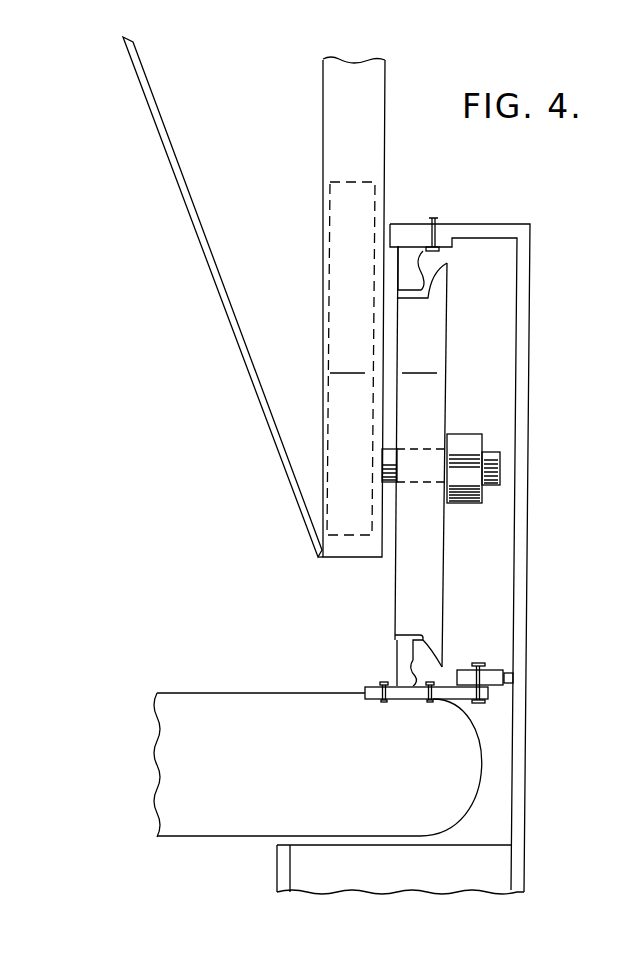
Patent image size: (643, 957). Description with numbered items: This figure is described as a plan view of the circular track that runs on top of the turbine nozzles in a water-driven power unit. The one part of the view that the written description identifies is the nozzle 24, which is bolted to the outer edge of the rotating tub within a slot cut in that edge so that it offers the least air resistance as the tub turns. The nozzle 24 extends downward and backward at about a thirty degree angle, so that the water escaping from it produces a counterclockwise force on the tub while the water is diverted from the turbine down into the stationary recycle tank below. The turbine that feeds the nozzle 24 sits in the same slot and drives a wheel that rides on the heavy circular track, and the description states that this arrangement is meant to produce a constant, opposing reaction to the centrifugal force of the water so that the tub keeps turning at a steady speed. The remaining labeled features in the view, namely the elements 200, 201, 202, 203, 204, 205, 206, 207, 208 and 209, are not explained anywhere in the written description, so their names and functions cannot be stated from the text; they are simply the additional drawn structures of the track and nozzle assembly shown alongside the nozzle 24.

The nozzle 24 is at (412, 783).
The fastener assembly 200 is at (465, 462).
The upper bracket 201 is at (411, 268).
The lower bracket 202 is at (408, 656).
The support frame 203 is at (533, 294).
The base member 204 is at (447, 879).
The panel 205 is at (195, 200).
The post 206 is at (386, 153).
The screw 207 is at (441, 218).
The adjusting bolt 208 is at (498, 667).
The nut 209 is at (503, 693).